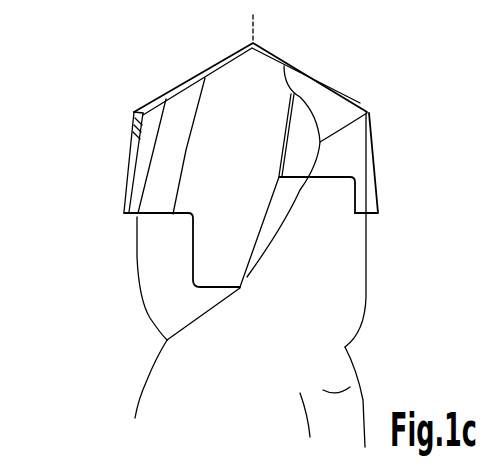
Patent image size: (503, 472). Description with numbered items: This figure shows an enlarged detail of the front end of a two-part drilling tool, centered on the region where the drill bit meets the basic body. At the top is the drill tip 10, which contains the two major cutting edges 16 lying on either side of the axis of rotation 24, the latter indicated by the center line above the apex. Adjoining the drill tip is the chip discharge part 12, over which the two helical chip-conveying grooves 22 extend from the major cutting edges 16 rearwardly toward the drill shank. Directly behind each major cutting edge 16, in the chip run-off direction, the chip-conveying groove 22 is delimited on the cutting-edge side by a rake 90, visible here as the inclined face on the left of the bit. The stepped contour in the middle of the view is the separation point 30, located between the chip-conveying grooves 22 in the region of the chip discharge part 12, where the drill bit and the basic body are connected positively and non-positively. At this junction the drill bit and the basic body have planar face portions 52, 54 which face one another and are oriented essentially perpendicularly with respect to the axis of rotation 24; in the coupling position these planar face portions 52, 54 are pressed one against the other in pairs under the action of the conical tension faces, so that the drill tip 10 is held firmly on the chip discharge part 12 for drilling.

The drill tip 10 is at (257, 50).
The chip discharge part 12 is at (347, 407).
The major cutting edges 16 is at (205, 77).
The chip-conveying grooves 22 is at (180, 302).
The axis of rotation 24 is at (252, 42).
The separation point 30 is at (183, 219).
The planar face portion 52 is at (325, 174).
The planar face portion 54 is at (325, 174).
The rake 90 is at (208, 123).